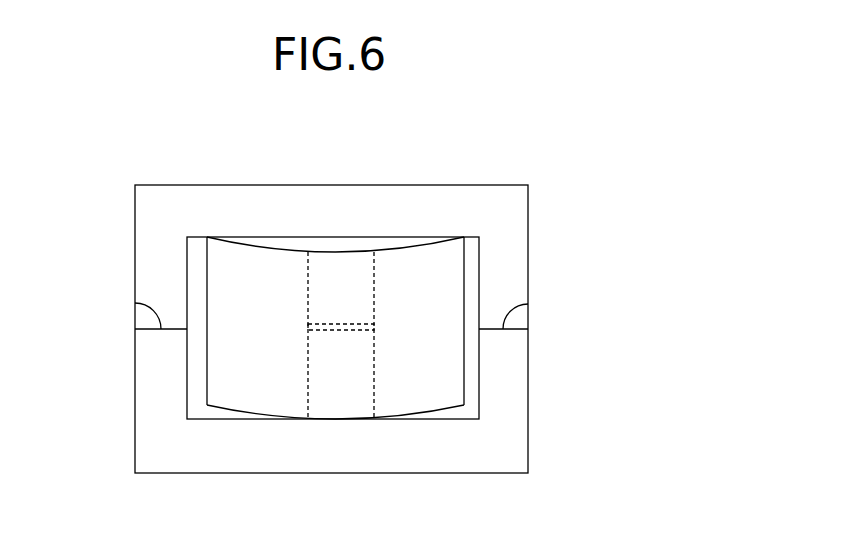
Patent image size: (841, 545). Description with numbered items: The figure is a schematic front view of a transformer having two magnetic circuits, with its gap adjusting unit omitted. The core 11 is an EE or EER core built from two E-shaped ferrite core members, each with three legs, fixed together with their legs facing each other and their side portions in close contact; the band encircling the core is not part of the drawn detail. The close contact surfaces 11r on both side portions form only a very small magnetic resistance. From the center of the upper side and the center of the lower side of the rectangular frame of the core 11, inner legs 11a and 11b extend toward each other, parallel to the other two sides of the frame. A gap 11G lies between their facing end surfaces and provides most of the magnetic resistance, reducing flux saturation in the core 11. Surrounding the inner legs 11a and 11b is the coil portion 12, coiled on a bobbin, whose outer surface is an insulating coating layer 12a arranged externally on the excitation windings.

The core 11 is at (345, 197).
The inner leg 11a is at (318, 377).
The inner leg 11b is at (320, 297).
The gap 11G is at (346, 321).
The close contact surfaces 11r is at (135, 298).
The coil portion 12 is at (196, 389).
The insulating coating layer 12a is at (440, 378).